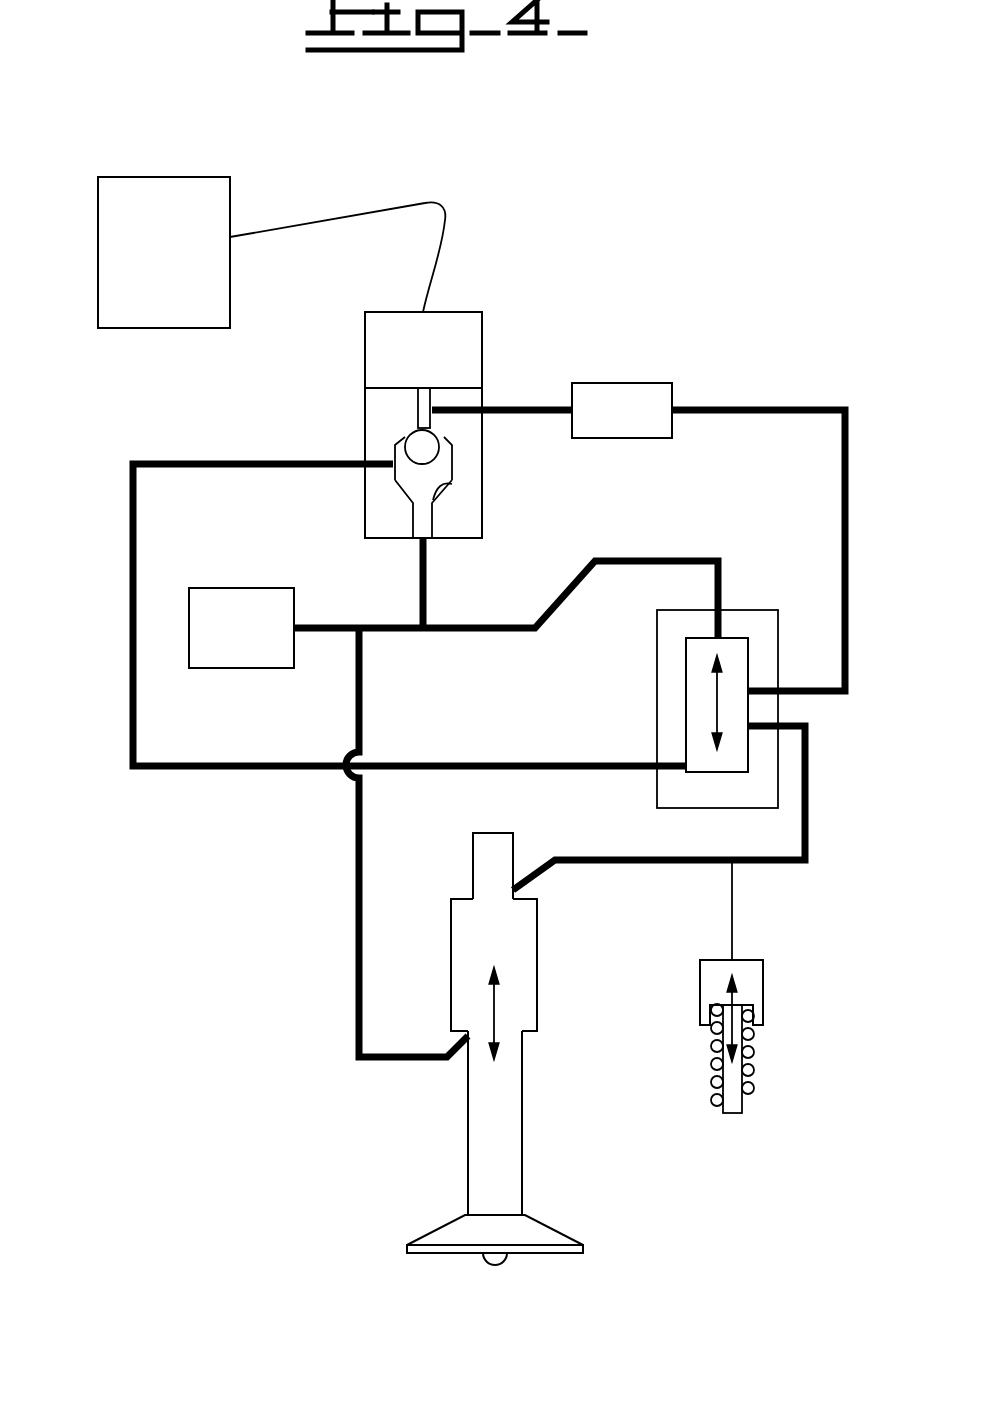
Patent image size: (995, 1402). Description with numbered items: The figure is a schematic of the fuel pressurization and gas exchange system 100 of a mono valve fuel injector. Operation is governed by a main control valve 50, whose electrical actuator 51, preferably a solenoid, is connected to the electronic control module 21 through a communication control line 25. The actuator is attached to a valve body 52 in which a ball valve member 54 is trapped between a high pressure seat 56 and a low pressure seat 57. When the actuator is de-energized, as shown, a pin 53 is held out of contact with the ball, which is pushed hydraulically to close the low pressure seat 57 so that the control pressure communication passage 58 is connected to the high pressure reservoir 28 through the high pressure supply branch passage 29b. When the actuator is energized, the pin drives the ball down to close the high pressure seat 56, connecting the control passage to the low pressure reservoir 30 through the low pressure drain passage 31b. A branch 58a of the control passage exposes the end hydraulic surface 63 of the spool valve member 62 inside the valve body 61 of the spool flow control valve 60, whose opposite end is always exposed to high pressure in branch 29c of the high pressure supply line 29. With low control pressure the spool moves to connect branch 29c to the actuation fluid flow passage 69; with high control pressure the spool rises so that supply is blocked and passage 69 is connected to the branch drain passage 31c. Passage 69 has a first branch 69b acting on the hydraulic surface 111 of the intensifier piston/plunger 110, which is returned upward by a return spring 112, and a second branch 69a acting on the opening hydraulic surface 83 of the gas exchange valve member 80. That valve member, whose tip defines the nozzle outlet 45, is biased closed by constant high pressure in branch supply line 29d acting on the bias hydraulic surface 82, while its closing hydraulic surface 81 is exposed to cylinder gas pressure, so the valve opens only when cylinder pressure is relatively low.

The electronic control module 21 is at (230, 200).
The communication control line 25 is at (425, 203).
The high pressure reservoir 28 is at (220, 588).
The high pressure supply line 29 is at (322, 635).
The high pressure supply branch passage 29b is at (430, 585).
The branch of high pressure supply line 29c is at (500, 630).
The branch supply line 29d is at (352, 870).
The low pressure reservoir 30 is at (640, 383).
The low pressure drain passage 31b is at (521, 410).
The branch drain passage 31c is at (755, 413).
The nozzle outlet 45 is at (487, 1258).
The main control valve 50 is at (465, 296).
The electrical actuator 51 is at (482, 333).
The valve body 52 is at (365, 508).
The pin 53 is at (418, 400).
The ball valve member 54 is at (405, 455).
The high pressure seat 56 is at (445, 487).
The low pressure seat 57 is at (440, 447).
The control pressure communication passage 58 is at (130, 500).
The branch of control passage 58a is at (520, 765).
The spool flow control valve 60 is at (788, 603).
The valve body 61 is at (657, 635).
The spool valve member 62 is at (686, 680).
The end hydraulic surface 63 is at (686, 772).
The actuation fluid flow passage 69 is at (808, 820).
The second branch of actuation fluid flow passage 69a is at (660, 865).
The first branch of actuation fluid flow passage 69b is at (735, 888).
The gas exchange valve member 80 is at (451, 940).
The closing hydraulic surface 81 is at (545, 1255).
The bias hydraulic surface 82 is at (522, 1038).
The opening hydraulic surface 83 is at (518, 890).
The fuel pressurization and gas exchange system 100 is at (675, 265).
The intensifier piston/plunger 110 is at (700, 975).
The hydraulic surface 111 is at (750, 960).
The return spring 112 is at (712, 1085).